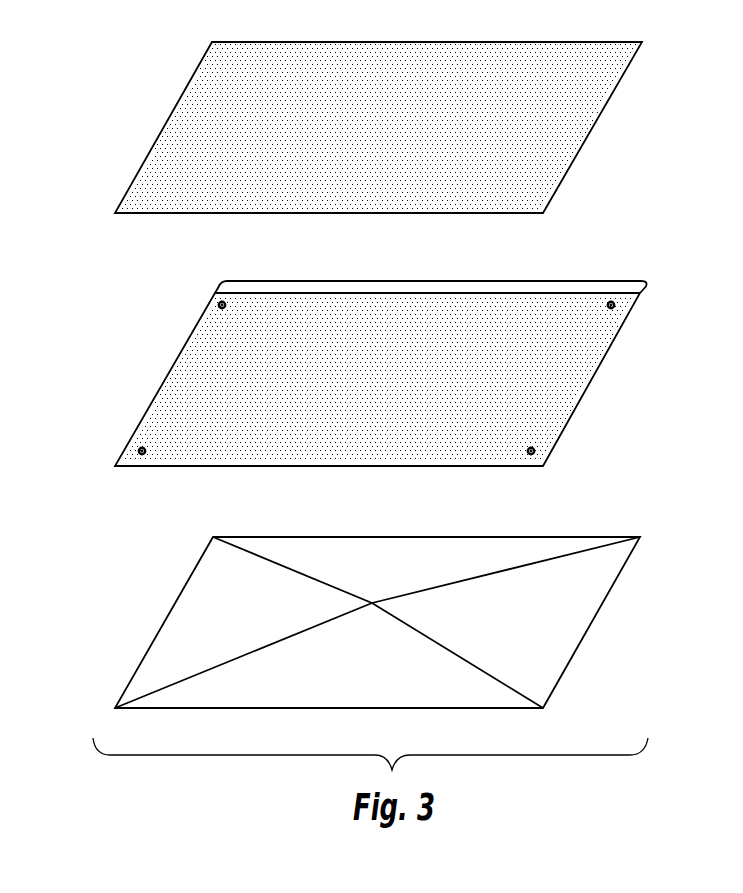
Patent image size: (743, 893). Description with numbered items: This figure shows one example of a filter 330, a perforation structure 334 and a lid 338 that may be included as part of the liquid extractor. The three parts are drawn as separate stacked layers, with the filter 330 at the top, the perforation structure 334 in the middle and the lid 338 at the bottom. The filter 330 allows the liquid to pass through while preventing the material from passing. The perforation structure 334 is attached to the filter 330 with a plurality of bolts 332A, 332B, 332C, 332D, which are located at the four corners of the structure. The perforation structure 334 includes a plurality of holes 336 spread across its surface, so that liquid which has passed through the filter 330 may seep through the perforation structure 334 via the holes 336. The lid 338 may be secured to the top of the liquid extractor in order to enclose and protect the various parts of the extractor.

The filter 330 is at (170, 137).
The bolt 332A is at (220, 302).
The bolt 332B is at (139, 454).
The bolt 332C is at (535, 452).
The bolt 332D is at (615, 306).
The perforation structure 334 is at (424, 280).
The holes 336 is at (592, 373).
The lid 338 is at (580, 617).